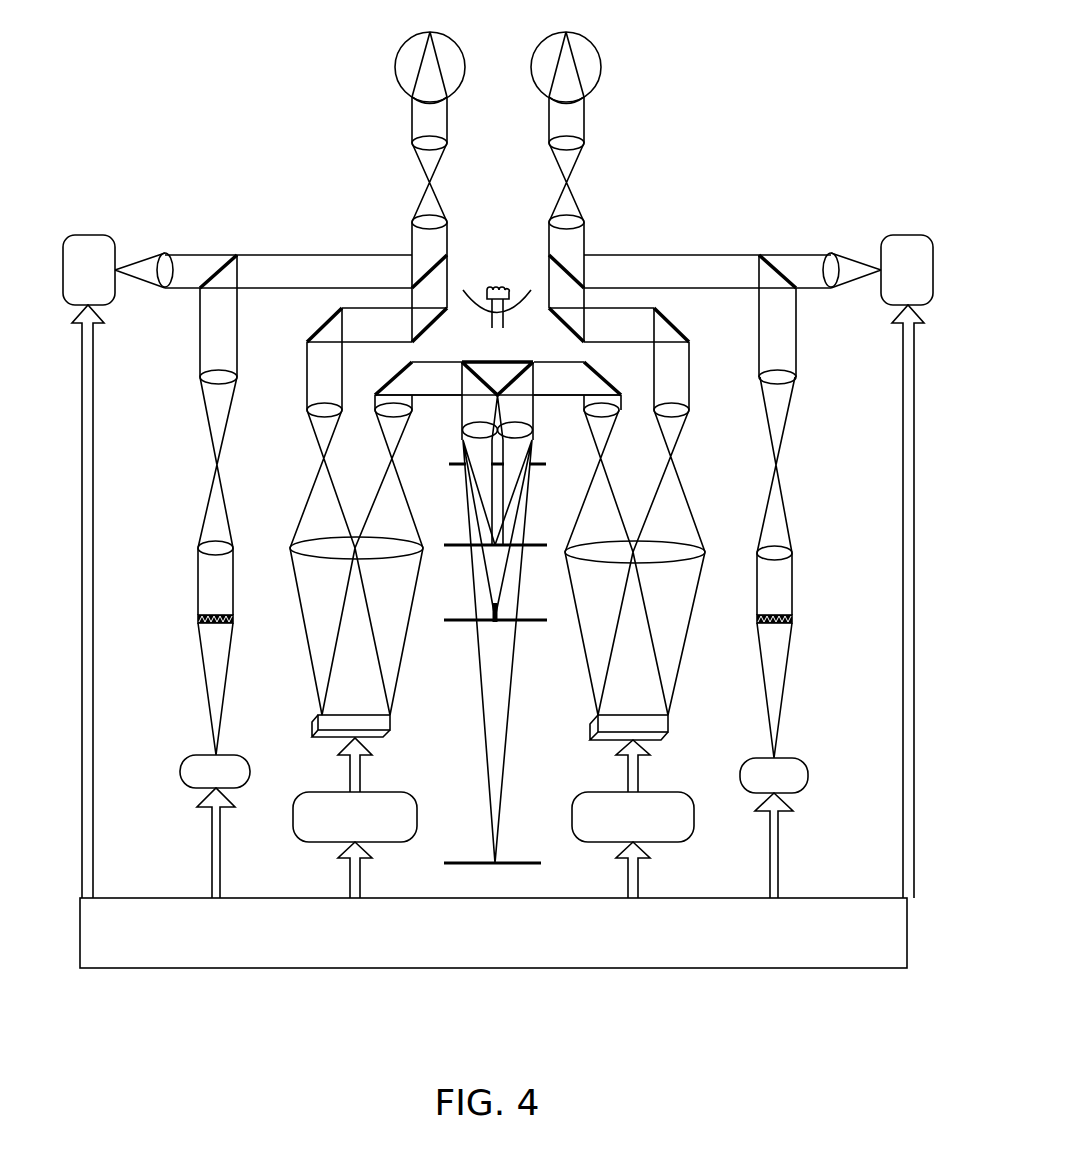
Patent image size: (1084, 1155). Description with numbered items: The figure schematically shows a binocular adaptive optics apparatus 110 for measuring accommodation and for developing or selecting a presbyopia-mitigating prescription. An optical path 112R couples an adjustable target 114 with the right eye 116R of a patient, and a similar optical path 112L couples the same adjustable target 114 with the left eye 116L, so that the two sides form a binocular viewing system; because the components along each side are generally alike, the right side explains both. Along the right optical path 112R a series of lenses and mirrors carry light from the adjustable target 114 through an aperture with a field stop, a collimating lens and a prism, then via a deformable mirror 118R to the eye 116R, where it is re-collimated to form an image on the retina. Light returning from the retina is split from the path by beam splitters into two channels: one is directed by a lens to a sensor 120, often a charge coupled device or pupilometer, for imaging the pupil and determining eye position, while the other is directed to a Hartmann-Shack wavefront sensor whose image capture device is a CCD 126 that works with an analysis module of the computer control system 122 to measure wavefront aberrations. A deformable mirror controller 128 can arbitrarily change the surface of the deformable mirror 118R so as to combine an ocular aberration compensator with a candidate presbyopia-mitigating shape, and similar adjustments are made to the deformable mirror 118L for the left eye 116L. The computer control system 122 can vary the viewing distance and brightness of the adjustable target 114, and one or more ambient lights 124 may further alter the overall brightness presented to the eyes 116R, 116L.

The adaptive optics apparatus 110 is at (818, 64).
The right optical path 112R is at (304, 488).
The left optical path 112L is at (681, 490).
The adjustable target 114 is at (456, 535).
The right eye 116R is at (402, 86).
The left eye 116L is at (594, 86).
The deformable mirror 118R is at (327, 738).
The deformable mirror 118L is at (656, 742).
The sensor 120 is at (108, 238).
The computer control system 122 is at (835, 970).
The ambient light 124 is at (497, 280).
The CCD 126 is at (183, 762).
The deformable mirror controller 128 is at (297, 841).